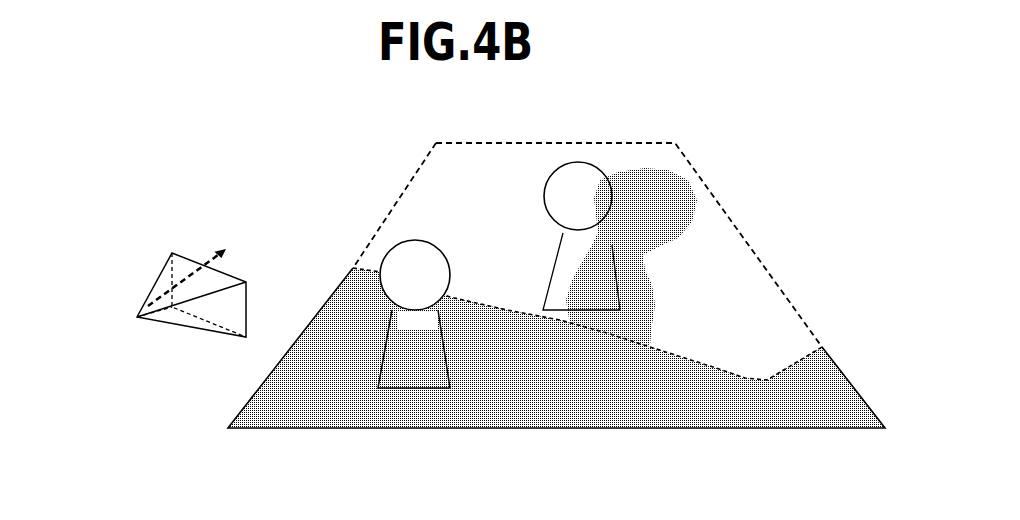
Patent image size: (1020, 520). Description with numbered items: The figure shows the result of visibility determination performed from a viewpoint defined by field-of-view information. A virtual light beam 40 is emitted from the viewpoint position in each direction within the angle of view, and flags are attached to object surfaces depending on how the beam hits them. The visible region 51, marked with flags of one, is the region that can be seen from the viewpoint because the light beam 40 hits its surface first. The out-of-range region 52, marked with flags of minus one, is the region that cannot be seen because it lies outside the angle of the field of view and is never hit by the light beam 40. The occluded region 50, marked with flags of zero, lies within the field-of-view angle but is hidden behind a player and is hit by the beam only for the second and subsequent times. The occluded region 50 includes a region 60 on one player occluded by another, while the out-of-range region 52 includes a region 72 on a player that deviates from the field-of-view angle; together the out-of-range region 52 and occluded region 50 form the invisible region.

The virtual light beam 40 is at (208, 253).
The occluded region 50 is at (644, 170).
The visible region 51 is at (425, 168).
The out-of-range region 52 is at (345, 296).
The region 60 is at (606, 163).
The region 72 is at (387, 375).